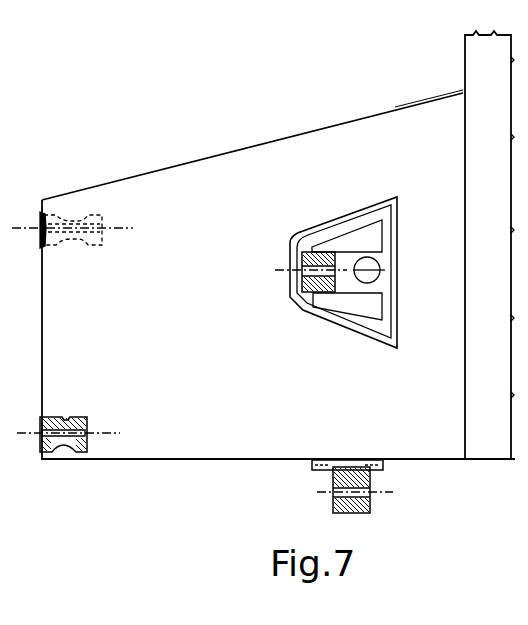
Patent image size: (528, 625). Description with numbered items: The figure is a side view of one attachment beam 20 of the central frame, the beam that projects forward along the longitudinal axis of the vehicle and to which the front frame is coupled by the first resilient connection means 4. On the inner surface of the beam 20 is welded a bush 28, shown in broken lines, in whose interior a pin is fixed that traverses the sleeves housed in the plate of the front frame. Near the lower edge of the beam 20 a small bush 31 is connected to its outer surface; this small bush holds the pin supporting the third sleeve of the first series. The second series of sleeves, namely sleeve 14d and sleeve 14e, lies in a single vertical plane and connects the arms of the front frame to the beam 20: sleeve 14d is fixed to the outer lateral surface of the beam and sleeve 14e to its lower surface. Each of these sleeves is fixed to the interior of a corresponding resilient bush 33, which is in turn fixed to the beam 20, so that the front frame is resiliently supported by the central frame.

The attachment beam 20 is at (260, 168).
The bush 28 is at (98, 203).
The small bush 31 is at (80, 455).
The resilient bush 33 is at (313, 250).
The first resilient connection means 4 is at (297, 288).
The sleeve 14d is at (312, 306).
The sleeve 14e is at (332, 505).